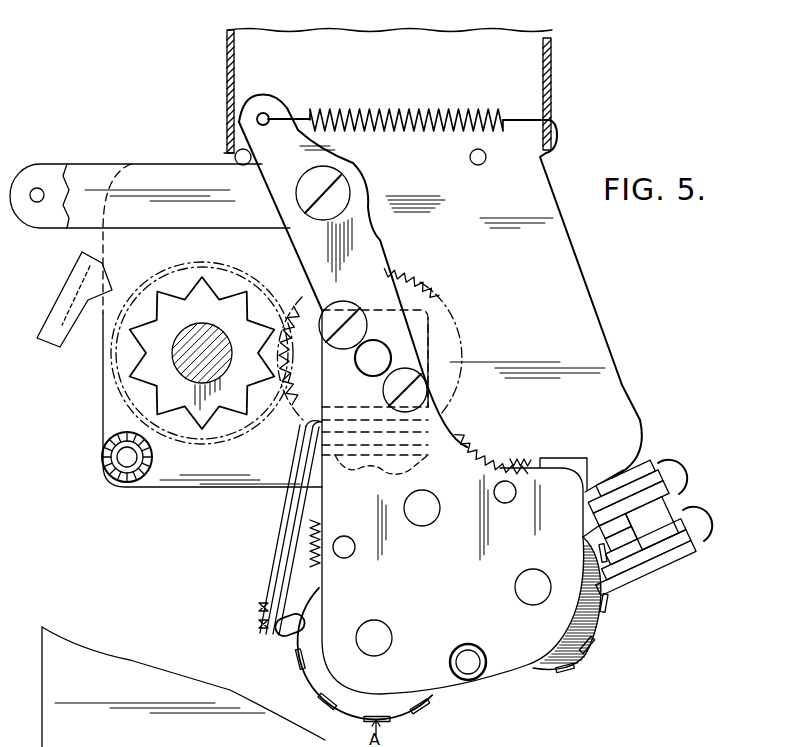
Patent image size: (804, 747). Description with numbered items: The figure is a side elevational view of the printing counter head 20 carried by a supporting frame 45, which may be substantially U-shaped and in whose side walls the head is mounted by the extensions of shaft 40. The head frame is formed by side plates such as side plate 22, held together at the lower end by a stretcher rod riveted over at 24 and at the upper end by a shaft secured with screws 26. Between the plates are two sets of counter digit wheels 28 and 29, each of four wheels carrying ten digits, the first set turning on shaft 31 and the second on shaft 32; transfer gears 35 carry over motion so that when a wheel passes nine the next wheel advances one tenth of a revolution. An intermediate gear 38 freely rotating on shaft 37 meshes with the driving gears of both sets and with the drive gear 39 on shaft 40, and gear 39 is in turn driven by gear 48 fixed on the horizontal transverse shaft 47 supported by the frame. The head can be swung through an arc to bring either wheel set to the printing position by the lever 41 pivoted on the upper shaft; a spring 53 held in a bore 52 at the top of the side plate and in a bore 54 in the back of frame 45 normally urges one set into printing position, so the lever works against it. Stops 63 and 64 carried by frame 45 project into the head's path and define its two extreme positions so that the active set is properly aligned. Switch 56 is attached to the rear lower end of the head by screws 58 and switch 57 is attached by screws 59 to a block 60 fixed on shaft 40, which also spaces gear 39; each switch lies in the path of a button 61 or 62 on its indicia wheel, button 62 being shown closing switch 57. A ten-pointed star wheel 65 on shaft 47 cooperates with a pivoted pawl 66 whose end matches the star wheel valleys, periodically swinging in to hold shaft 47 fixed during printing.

The counter unit 20 is at (590, 657).
The side plate 22 is at (518, 655).
The riveted end 24 is at (461, 679).
The screws 26 is at (347, 200).
The counter digit wheels 28 is at (590, 623).
The counter digit wheels 29 is at (400, 703).
The shaft 31 is at (543, 560).
The shaft 32 is at (377, 638).
The transfer gears 35 is at (515, 458).
The shaft 37 is at (425, 527).
The intermediate gear 38 is at (462, 445).
The drive gear 39 is at (430, 290).
The shaft 40 is at (368, 368).
The lever 41 is at (100, 170).
The frame 45 is at (608, 357).
The shaft 47 is at (213, 330).
The gear 48 is at (283, 313).
The bore 52 is at (265, 113).
The spring 53 is at (467, 112).
The bore 54 is at (550, 120).
The switch 56 is at (650, 528).
The switch 57 is at (283, 520).
The screws 58 is at (695, 508).
The screws 59 is at (390, 467).
The block 60 is at (420, 325).
The button 61 is at (593, 520).
The button 62 is at (283, 640).
The stop 63 is at (230, 150).
The stop 64 is at (479, 165).
The star wheel 65 is at (128, 372).
The pawl 66 is at (67, 282).